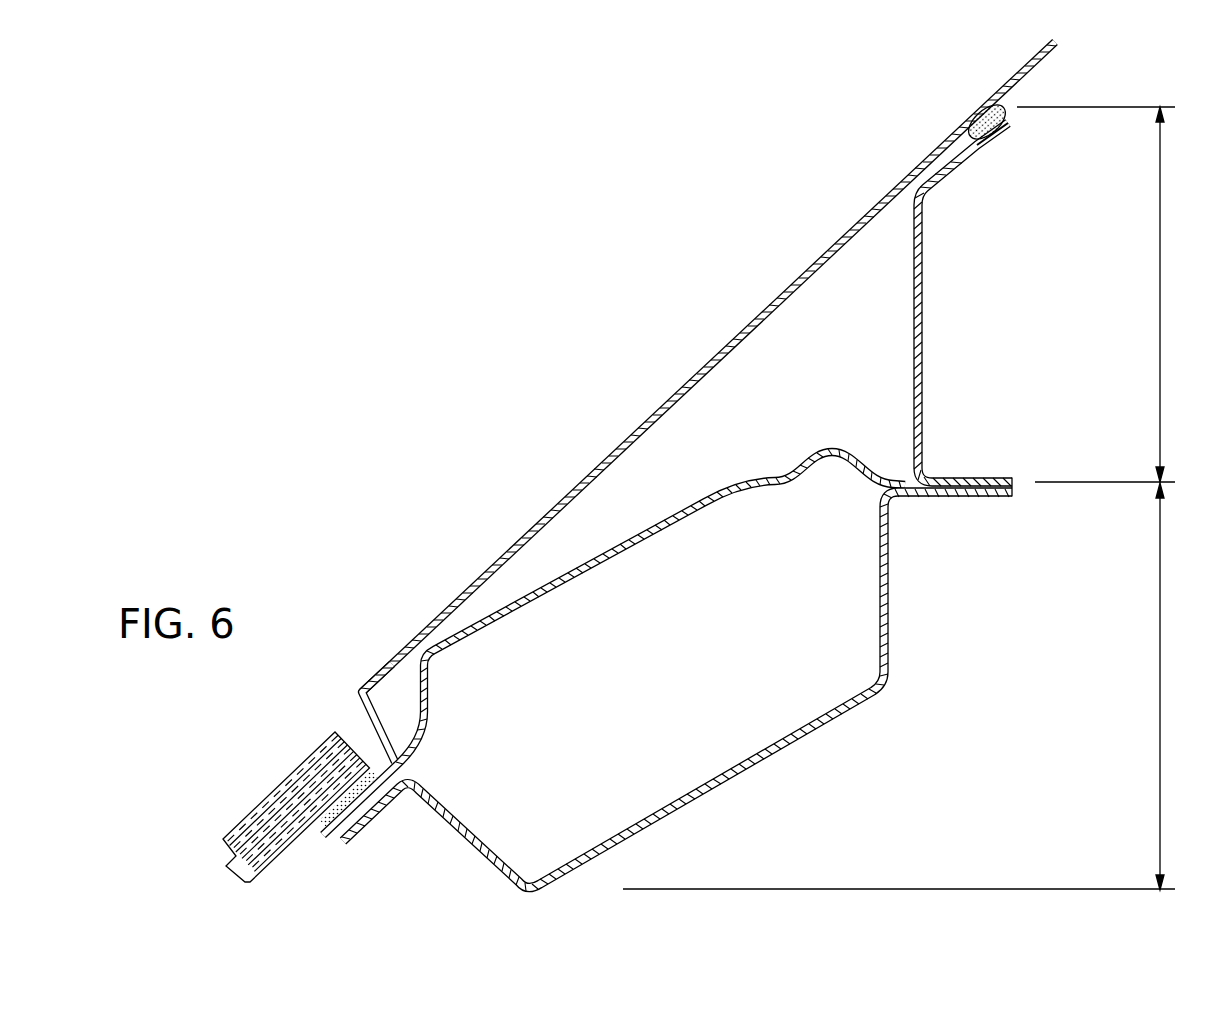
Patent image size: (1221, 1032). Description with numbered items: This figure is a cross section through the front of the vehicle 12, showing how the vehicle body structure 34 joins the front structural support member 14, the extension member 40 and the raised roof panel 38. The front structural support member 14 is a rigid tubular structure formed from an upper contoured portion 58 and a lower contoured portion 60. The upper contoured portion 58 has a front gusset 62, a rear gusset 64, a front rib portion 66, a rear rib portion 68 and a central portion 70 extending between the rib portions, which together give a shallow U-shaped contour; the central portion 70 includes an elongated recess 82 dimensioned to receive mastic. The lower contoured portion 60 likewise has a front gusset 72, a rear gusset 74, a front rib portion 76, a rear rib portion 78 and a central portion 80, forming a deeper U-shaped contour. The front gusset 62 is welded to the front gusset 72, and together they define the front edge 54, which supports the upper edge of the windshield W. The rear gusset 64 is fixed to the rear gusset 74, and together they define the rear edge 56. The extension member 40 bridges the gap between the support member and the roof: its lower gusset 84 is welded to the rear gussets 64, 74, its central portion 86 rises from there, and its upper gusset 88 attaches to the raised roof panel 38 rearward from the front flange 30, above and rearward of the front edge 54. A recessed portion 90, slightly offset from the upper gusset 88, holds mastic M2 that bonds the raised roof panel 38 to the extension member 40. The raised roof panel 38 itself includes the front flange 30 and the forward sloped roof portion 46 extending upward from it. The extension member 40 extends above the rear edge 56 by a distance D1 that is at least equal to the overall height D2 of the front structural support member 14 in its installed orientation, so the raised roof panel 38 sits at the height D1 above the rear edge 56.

The vehicle 12 is at (632, 473).
The front structural support member 14 is at (688, 692).
The front flange 30 is at (358, 728).
The vehicle body structure 34 is at (666, 461).
The raised roof panel 38 is at (673, 402).
The extension member 40 is at (987, 271).
The forward sloped roof portion 46 is at (768, 303).
The front edge 54 is at (346, 846).
The rear edge 56 is at (1016, 497).
The upper contoured portion 58 is at (571, 590).
The lower contoured portion 60 is at (676, 812).
The front gusset 62 is at (340, 836).
The rear gusset 64 is at (980, 497).
The front rib portion 66 is at (430, 706).
The rear rib portion 68 is at (872, 463).
The central portion 70 is at (591, 643).
The front gusset 72 is at (358, 842).
The rear gusset 74 is at (943, 498).
The front rib portion 76 is at (480, 841).
The rear rib portion 78 is at (882, 586).
The central portion 80 is at (772, 746).
The recess 82 is at (790, 473).
The lower gusset 84 is at (988, 477).
The central portion 86 is at (923, 292).
The upper gusset 88 is at (938, 182).
The recessed portion 90 is at (990, 146).
The mastic M2 is at (979, 100).
The windshield W is at (286, 791).
The distance D1 is at (1096, 294).
The overall height D2 is at (899, 686).